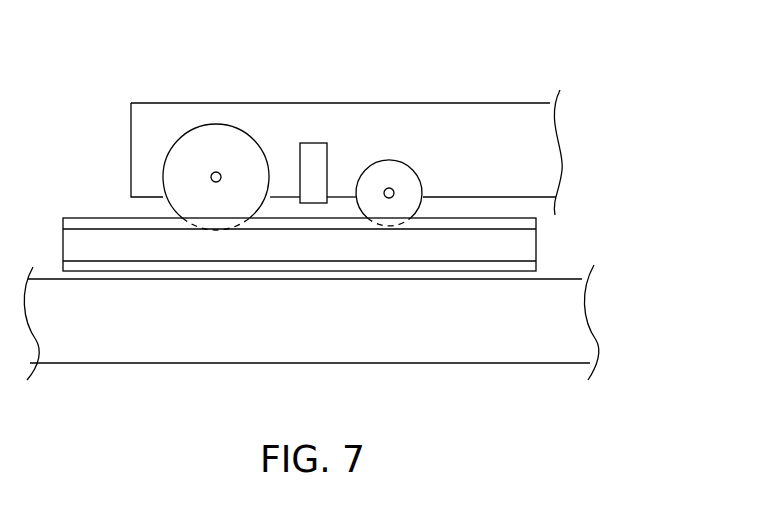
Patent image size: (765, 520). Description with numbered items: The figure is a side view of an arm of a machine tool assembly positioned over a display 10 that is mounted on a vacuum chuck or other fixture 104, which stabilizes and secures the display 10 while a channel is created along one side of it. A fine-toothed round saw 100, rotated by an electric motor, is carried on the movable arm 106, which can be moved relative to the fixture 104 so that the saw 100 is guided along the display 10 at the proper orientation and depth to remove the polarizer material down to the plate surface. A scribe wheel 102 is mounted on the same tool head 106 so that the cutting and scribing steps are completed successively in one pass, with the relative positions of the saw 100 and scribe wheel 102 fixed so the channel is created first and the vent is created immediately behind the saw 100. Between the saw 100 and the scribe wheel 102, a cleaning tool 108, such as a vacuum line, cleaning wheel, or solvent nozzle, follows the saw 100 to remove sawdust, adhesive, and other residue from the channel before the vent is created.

The display 10 is at (536, 231).
The saw 100 is at (231, 134).
The scribe wheel 102 is at (410, 181).
The fixture 104 is at (122, 345).
The movable arm 106 is at (398, 103).
The cleaning tool 108 is at (327, 182).